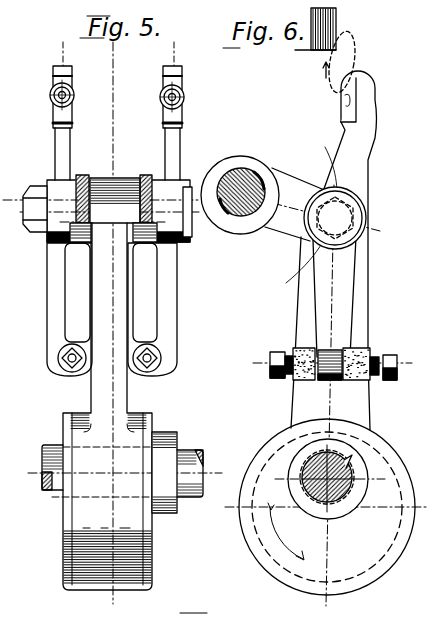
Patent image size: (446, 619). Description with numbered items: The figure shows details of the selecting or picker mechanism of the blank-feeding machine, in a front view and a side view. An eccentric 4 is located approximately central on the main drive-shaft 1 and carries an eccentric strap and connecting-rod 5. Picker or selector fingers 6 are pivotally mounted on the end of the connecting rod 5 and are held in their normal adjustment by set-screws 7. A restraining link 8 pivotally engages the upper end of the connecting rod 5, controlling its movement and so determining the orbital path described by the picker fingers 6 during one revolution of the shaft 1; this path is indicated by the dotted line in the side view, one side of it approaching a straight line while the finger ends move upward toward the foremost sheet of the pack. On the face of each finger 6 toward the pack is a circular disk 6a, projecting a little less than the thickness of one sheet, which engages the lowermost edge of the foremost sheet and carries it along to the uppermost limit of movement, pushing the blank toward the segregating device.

In FIG. 5, the main drive-shaft 1 is at (122, 472).
In FIG. 6, the eccentric 4 is at (327, 507).
In FIG. 5, the connecting-rod 5 is at (107, 406).
In FIG. 5, the picker fingers 6 is at (195, 155).
In FIG. 6, the picker fingers 6 is at (358, 158).
In FIG. 5, the circular disk 6a is at (207, 102).
In FIG. 6, the circular disk 6a is at (339, 104).
In FIG. 5, the set-screws 7 is at (145, 380).
In FIG. 6, the set-screws 7 is at (395, 382).
In FIG. 5, the restraining link 8 is at (145, 180).
In FIG. 6, the restraining link 8 is at (325, 218).